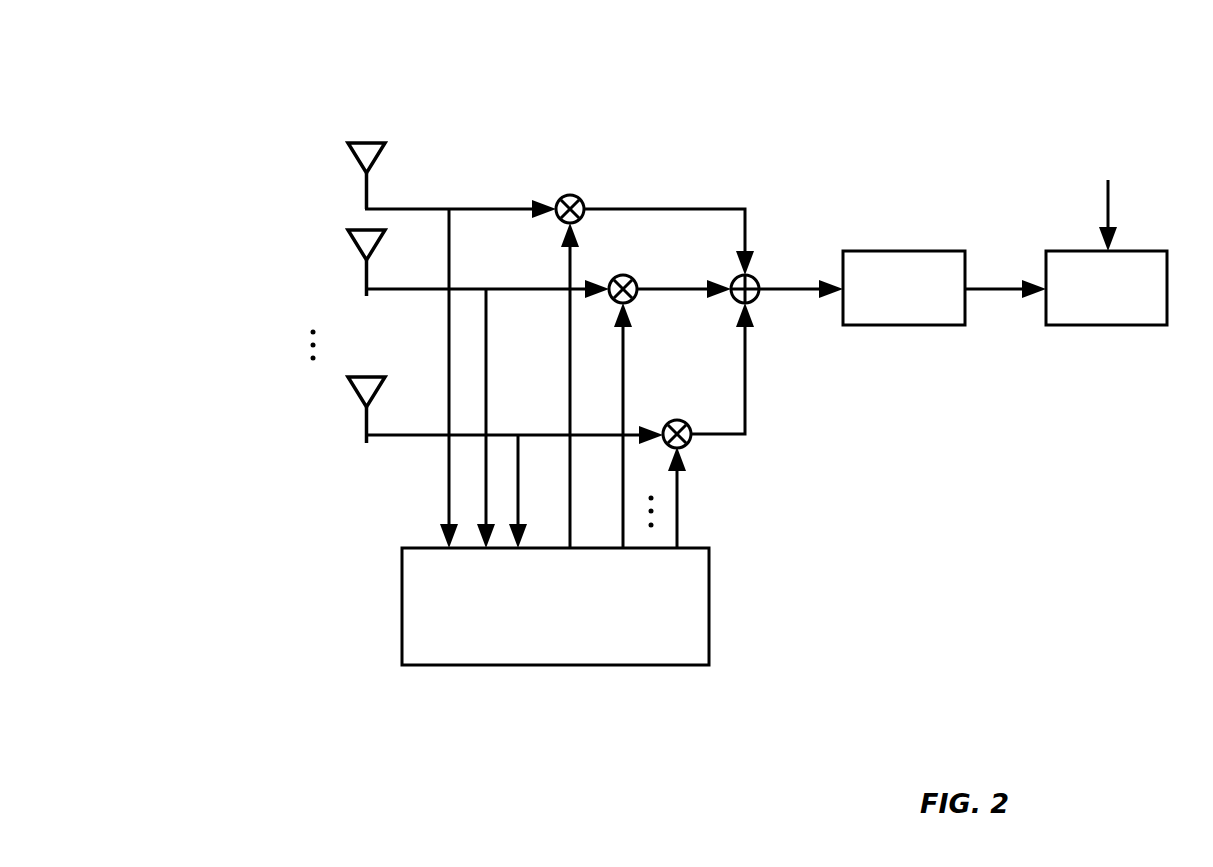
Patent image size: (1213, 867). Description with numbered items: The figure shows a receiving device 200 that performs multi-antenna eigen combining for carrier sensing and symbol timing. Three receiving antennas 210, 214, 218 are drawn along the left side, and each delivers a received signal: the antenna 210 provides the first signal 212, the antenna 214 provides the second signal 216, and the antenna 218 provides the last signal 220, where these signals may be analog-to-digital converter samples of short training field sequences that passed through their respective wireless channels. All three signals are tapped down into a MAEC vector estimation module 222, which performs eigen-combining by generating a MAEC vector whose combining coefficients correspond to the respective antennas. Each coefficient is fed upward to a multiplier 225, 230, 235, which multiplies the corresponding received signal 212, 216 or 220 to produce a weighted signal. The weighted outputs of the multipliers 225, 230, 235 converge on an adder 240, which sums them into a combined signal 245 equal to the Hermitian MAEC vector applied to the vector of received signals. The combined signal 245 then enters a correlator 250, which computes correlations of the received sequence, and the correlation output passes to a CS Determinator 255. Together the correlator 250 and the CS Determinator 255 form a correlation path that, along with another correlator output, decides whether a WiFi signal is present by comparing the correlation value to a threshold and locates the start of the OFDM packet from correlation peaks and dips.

The receiving device 200 is at (152, 80).
The antenna 210 is at (355, 142).
The signal y0[k] 212 is at (297, 172).
The antenna 214 is at (349, 231).
The signal y1[k] 216 is at (295, 281).
The antenna 218 is at (357, 376).
The signal yN-1[k] 220 is at (286, 450).
The MAEC vector estimation module 222 is at (712, 600).
The multiplier 225 is at (566, 194).
The multiplier 230 is at (625, 274).
The multiplier 235 is at (673, 420).
The adder 240 is at (760, 306).
The combined signal yc[k] 245 is at (802, 242).
The correlator 250 is at (922, 249).
The CS Determinator 255 is at (1136, 250).